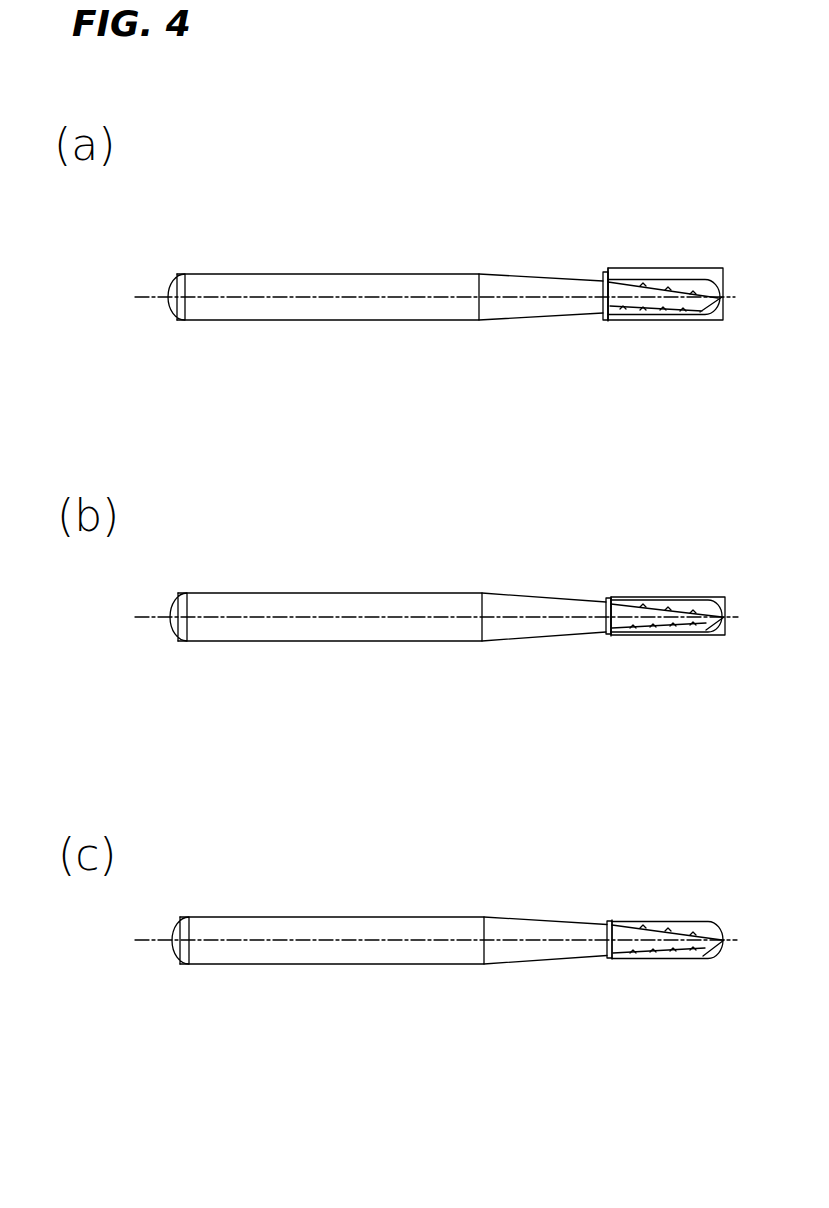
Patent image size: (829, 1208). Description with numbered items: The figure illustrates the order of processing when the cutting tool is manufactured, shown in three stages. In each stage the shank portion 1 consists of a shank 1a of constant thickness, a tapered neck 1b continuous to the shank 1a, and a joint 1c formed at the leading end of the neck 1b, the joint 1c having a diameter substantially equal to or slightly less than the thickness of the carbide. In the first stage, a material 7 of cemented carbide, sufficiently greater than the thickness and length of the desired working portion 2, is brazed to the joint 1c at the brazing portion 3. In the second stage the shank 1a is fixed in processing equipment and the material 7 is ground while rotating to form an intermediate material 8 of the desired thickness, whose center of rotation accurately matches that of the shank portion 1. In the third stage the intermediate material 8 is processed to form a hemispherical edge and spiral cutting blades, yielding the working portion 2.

The shank portion 1 is at (446, 606).
The shank 1a is at (400, 290).
The neck 1b is at (520, 290).
The joint 1c is at (604, 284).
The working portion 2 is at (712, 920).
The brazing portion 3 is at (605, 322).
The material 7 is at (718, 270).
The intermediate material 8 is at (720, 597).